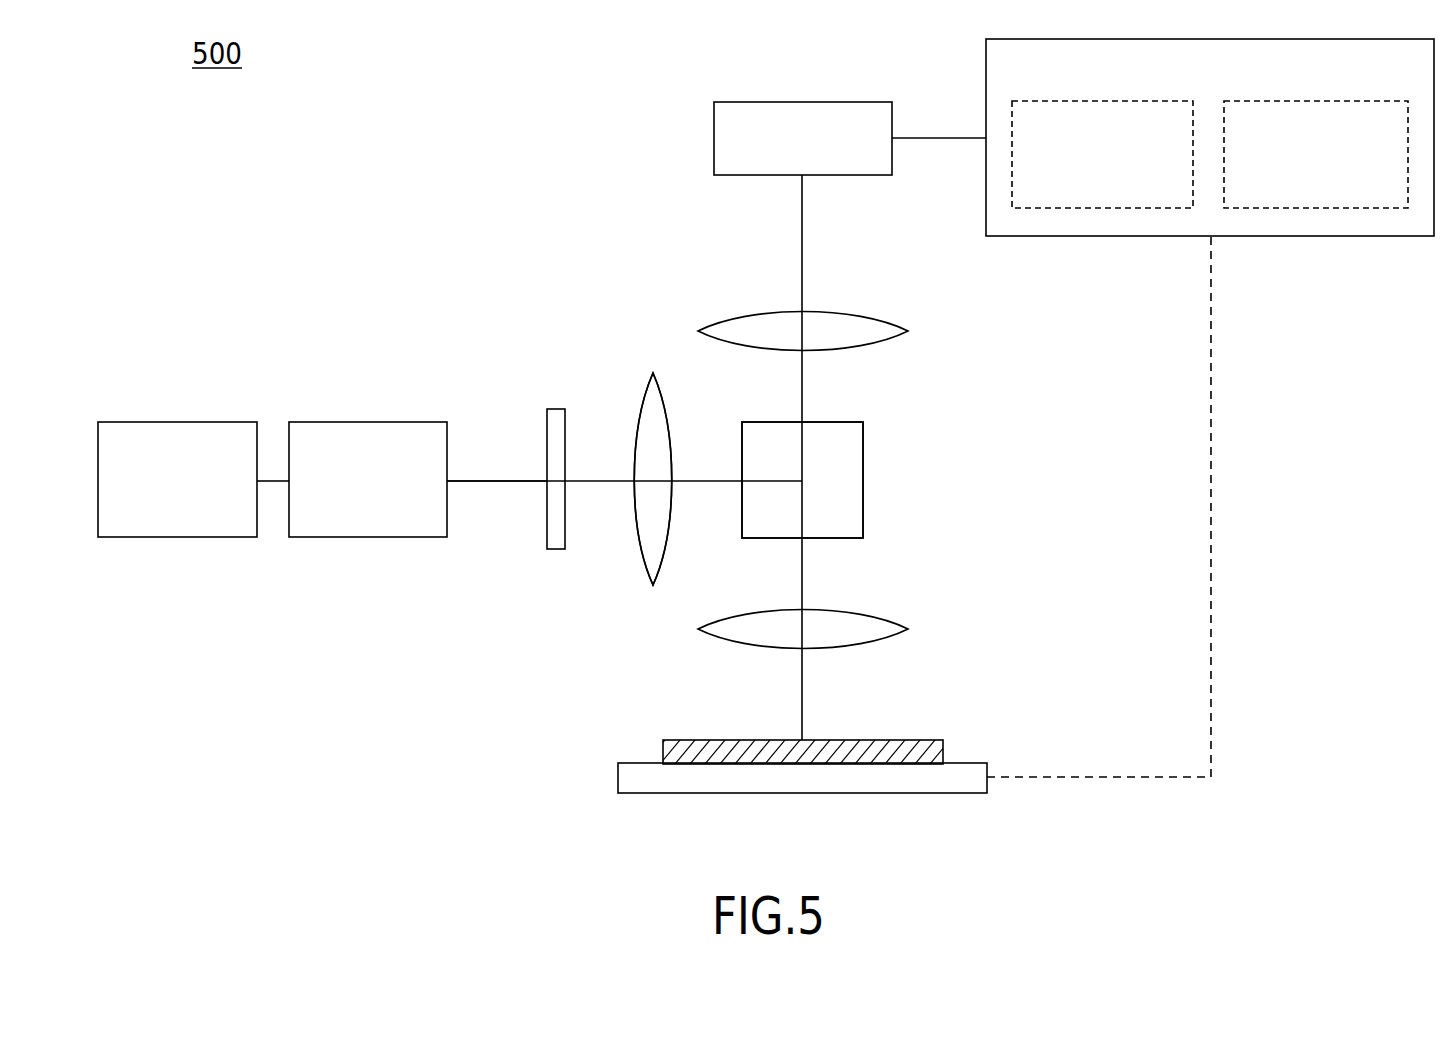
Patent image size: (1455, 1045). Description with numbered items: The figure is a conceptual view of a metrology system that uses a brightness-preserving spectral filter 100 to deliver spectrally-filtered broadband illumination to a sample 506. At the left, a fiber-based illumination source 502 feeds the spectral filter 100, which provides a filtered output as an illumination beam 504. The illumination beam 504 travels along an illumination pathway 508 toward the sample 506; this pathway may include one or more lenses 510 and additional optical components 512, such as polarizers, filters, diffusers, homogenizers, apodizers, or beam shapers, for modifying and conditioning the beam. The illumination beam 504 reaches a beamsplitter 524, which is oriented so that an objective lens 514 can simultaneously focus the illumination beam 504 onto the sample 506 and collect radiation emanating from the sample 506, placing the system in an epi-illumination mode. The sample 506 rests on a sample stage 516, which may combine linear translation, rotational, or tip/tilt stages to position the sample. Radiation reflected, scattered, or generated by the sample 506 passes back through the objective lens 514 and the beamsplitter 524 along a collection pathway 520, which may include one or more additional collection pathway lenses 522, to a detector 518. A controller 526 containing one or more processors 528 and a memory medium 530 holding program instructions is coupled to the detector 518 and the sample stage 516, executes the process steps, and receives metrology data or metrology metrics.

The fiber-based illumination source 502 is at (198, 492).
The spectral filter 100 is at (388, 492).
The illumination beam 504 is at (500, 476).
The optical components 512 is at (555, 549).
The lenses 510 is at (652, 585).
The illumination pathway 508 is at (627, 356).
The beamsplitter 524 is at (863, 478).
The collection pathway 520 is at (897, 406).
The collection pathway lenses 522 is at (888, 318).
The objective lens 514 is at (887, 616).
The detector 518 is at (823, 148).
The sample 506 is at (943, 752).
The sample stage 516 is at (987, 770).
The controller 526 is at (1032, 68).
The processors 528 is at (1058, 130).
The memory medium 530 is at (1272, 130).